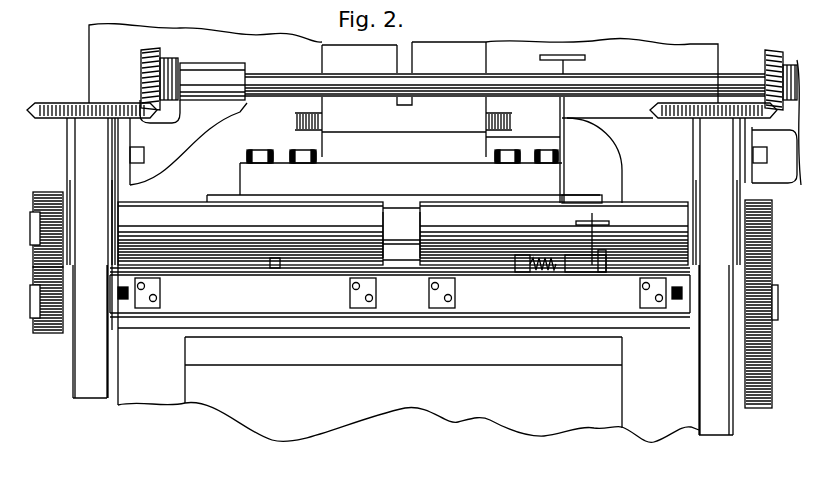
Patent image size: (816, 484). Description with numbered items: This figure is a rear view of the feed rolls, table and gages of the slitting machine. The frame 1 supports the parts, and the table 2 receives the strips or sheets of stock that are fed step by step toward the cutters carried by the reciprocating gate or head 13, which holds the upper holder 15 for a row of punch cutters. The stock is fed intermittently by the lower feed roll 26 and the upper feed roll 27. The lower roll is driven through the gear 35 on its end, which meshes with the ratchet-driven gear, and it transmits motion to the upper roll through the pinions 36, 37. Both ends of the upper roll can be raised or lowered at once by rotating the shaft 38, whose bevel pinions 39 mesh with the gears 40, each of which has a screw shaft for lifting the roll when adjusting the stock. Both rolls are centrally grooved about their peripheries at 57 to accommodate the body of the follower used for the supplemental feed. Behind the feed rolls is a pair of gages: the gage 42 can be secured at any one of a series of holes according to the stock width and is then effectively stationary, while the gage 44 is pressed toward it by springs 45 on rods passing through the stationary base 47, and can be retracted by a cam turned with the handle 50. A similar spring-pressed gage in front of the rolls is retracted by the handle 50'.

The frame 1 is at (658, 424).
The table 2 is at (200, 268).
The gate or head 13 is at (318, 142).
The upper holder 15 is at (585, 198).
The lower feed roll 26 is at (306, 322).
The upper feed roll 27 is at (403, 233).
The gear 35 is at (753, 410).
The pinion 36 is at (44, 338).
The pinion 37 is at (38, 194).
The shaft 38 is at (660, 78).
The bevel pinion 39 is at (141, 64).
The gear 40 is at (52, 103).
The gage 42 is at (276, 268).
The gage 44 is at (524, 270).
The spring 45 is at (550, 272).
The stationary base 47 is at (590, 272).
The handle 50 is at (622, 239).
The handle 50' is at (568, 42).
The groove 57 is at (410, 265).